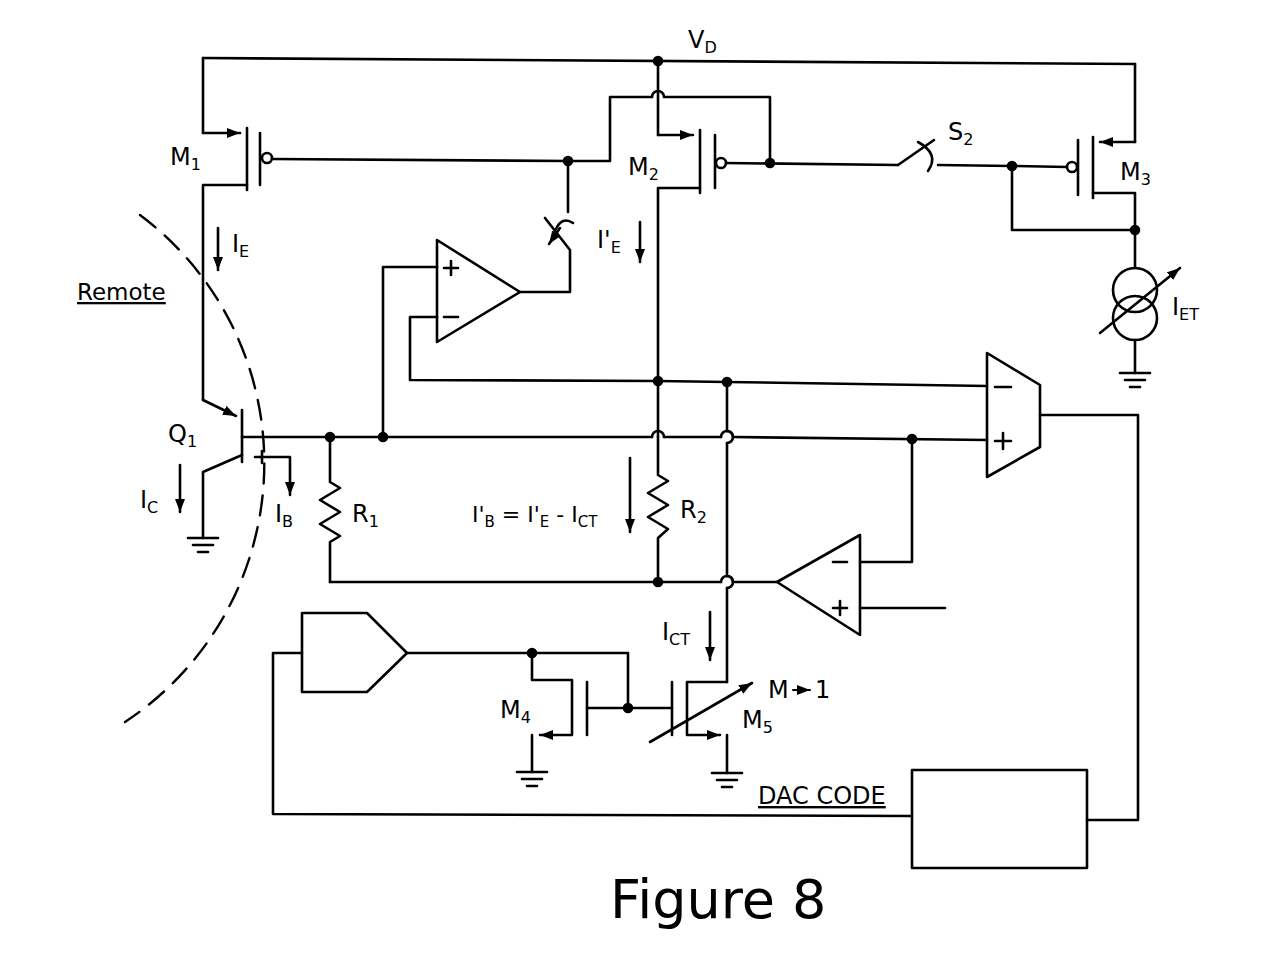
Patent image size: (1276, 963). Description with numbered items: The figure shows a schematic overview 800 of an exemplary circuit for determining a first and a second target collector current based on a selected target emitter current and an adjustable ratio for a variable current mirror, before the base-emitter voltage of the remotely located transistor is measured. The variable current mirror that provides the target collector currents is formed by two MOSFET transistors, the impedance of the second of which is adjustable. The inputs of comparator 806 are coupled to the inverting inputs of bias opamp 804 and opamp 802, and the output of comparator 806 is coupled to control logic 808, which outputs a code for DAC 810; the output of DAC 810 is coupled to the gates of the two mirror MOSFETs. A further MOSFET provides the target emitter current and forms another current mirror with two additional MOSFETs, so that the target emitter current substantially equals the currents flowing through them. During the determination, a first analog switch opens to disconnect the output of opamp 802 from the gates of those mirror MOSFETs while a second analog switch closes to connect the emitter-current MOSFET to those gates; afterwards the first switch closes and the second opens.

The overview 800 is at (1168, 84).
The opamp 802 is at (458, 250).
The bias opamp 804 is at (818, 558).
The comparator 806 is at (1022, 458).
The control logic 808 is at (965, 770).
The DAC 810 is at (338, 692).